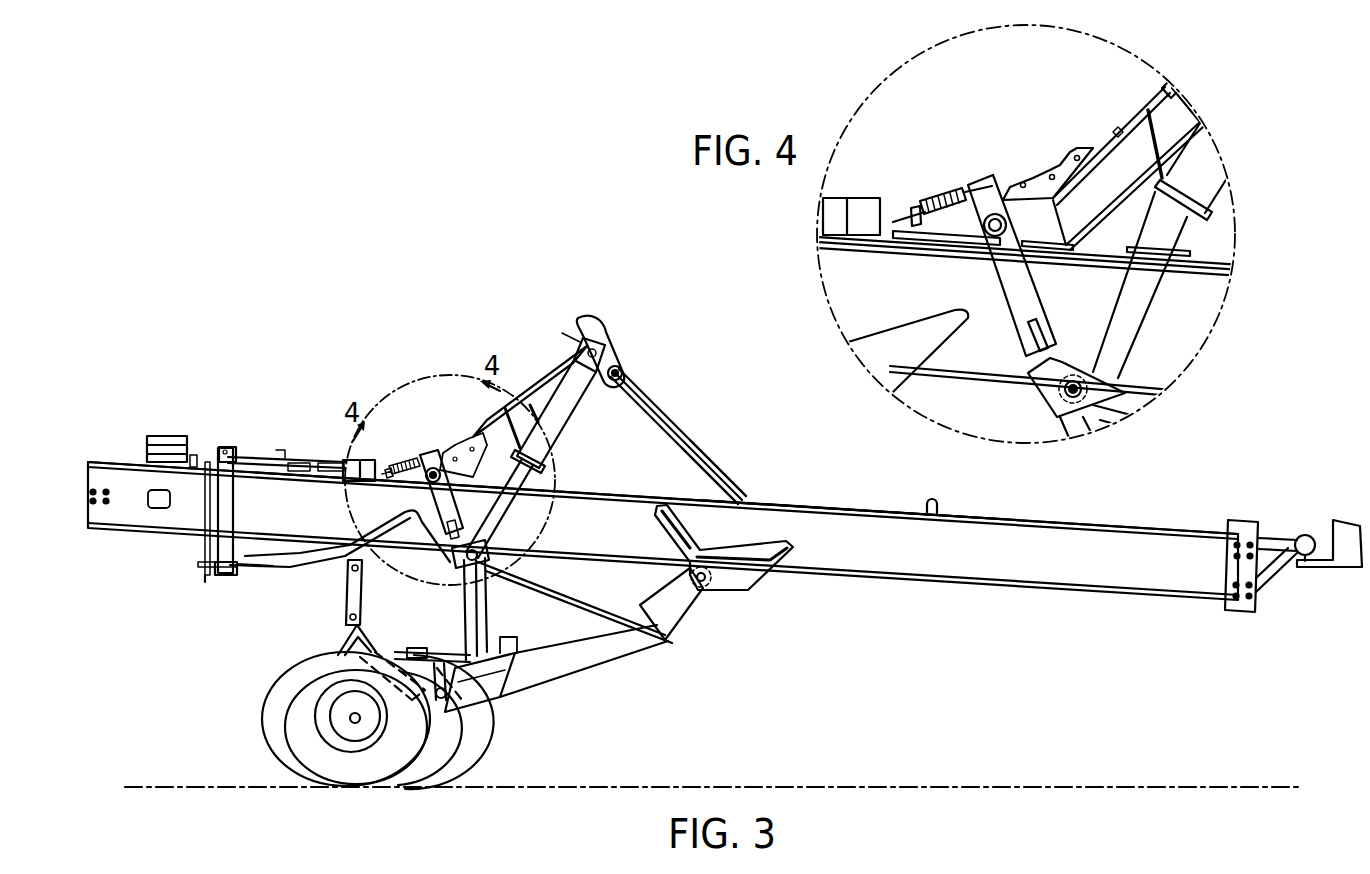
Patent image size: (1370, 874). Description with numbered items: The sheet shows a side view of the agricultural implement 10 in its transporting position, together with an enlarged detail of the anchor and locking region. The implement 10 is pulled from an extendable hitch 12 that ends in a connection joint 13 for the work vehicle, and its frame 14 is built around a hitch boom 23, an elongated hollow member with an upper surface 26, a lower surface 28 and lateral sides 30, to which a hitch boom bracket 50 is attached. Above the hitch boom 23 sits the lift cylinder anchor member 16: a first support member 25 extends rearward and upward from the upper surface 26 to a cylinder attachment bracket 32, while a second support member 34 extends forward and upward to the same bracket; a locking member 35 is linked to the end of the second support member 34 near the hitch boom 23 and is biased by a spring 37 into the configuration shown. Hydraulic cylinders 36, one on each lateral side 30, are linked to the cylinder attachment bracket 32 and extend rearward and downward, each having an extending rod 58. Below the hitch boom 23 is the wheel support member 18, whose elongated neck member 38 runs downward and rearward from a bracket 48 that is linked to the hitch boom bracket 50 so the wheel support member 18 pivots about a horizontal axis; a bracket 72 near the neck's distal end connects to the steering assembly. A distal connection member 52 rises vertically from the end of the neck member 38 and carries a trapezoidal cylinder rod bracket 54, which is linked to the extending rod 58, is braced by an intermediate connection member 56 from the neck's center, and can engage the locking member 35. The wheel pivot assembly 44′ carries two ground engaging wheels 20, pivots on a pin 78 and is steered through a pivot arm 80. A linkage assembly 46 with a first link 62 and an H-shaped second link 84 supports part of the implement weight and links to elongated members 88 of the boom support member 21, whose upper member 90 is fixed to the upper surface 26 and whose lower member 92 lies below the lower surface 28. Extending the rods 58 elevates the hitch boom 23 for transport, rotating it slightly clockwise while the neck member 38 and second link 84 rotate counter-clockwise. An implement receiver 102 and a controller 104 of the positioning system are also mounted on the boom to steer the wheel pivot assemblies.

In FIG. 3, the agricultural implement 10 is at (504, 245).
In FIG. 3, the extendable hitch 12 is at (1268, 535).
In FIG. 3, the connection joint 13 is at (1305, 536).
In FIG. 3, the frame 14 is at (1025, 520).
In FIG. 3, the lift cylinder anchor member 16 is at (652, 385).
In FIG. 3, the wheel support member 18 is at (630, 665).
In FIG. 3, the ground engaging wheels 20 is at (262, 722).
In FIG. 3, the boom support member 21 is at (251, 450).
In FIG. 3, the hitch boom 23 is at (860, 510).
In FIG. 3, the first support member 25 is at (690, 443).
In FIG. 3, the upper surface 26 is at (1140, 530).
In FIG. 3, the lower surface 28 is at (1078, 590).
In FIG. 3, the lateral sides 30 is at (1018, 568).
In FIG. 3, the cylinder attachment bracket 32 is at (612, 345).
In FIG. 3, the second support member 34 is at (543, 380).
In FIG. 4, the second support member 34 is at (1110, 143).
In FIG. 4, the locking member 35 is at (983, 177).
In FIG. 3, the hydraulic cylinders 36 is at (567, 410).
In FIG. 4, the hydraulic cylinders 36 is at (1207, 163).
In FIG. 3, the spring 37 is at (408, 453).
In FIG. 4, the spring 37 is at (943, 197).
In FIG. 3, the elongated neck member 38 is at (660, 645).
In FIG. 3, the wheel pivot assembly 44′ is at (421, 644).
In FIG. 3, the linkage assembly 46 is at (335, 629).
In FIG. 3, the bracket 48 is at (700, 605).
In FIG. 3, the hitch boom bracket 50 is at (775, 585).
In FIG. 3, the distal connection member 52 is at (487, 613).
In FIG. 4, the distal connection member 52 is at (1063, 430).
In FIG. 4, the cylinder rod bracket 54 is at (1043, 392).
In FIG. 4, the intermediate connection member 56 is at (1135, 403).
In FIG. 4, the extending rod 58 is at (1130, 310).
In FIG. 3, the first link 62 is at (330, 670).
In FIG. 3, the bracket 72 is at (543, 637).
In FIG. 3, the pin 78 is at (457, 670).
In FIG. 3, the pivot arm 80 is at (413, 655).
In FIG. 3, the second link 84 is at (352, 597).
In FIG. 3, the elongated members 88 is at (287, 570).
In FIG. 3, the upper member 90 is at (305, 460).
In FIG. 3, the lower member 92 is at (203, 550).
In FIG. 3, the implement receiver 102 is at (352, 460).
In FIG. 4, the implement receiver 102 is at (838, 196).
In FIG. 3, the controller 104 is at (397, 460).
In FIG. 4, the controller 104 is at (868, 197).